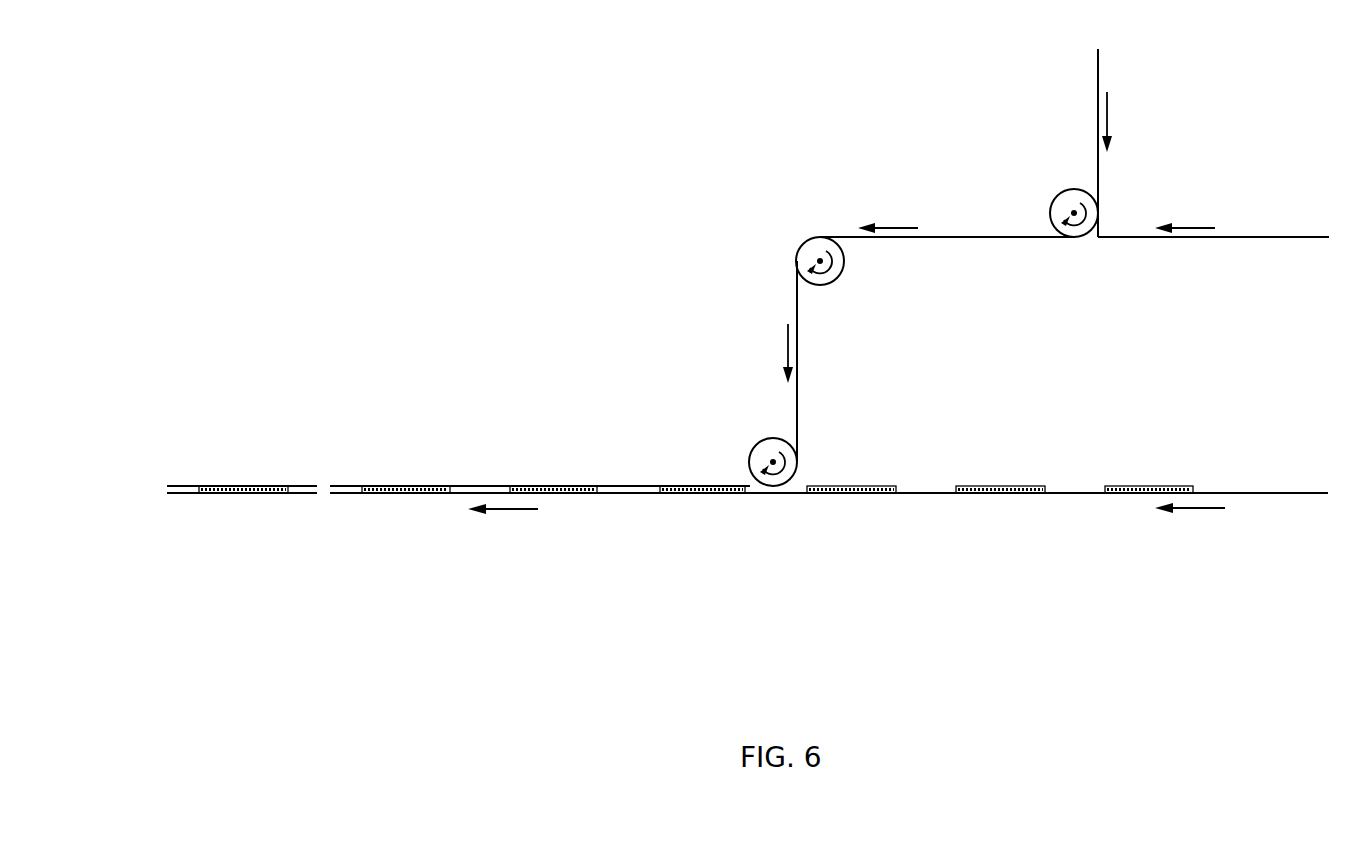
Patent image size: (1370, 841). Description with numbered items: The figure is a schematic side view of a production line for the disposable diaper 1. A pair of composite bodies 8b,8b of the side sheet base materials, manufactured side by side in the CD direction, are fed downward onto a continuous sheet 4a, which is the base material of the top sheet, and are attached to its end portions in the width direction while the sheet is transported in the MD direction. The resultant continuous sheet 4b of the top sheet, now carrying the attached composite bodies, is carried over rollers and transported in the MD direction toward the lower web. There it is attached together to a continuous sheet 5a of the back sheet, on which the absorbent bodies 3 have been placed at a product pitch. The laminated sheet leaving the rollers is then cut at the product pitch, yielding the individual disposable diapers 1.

The disposable diaper 1 is at (243, 485).
The absorbent body 3 is at (853, 485).
The continuous sheet 4a is at (1272, 236).
The continuous sheet of the top sheet 4b is at (947, 236).
The continuous sheet of the back sheet 5a is at (1237, 492).
The pair of composite bodies 8b,8b is at (1097, 108).